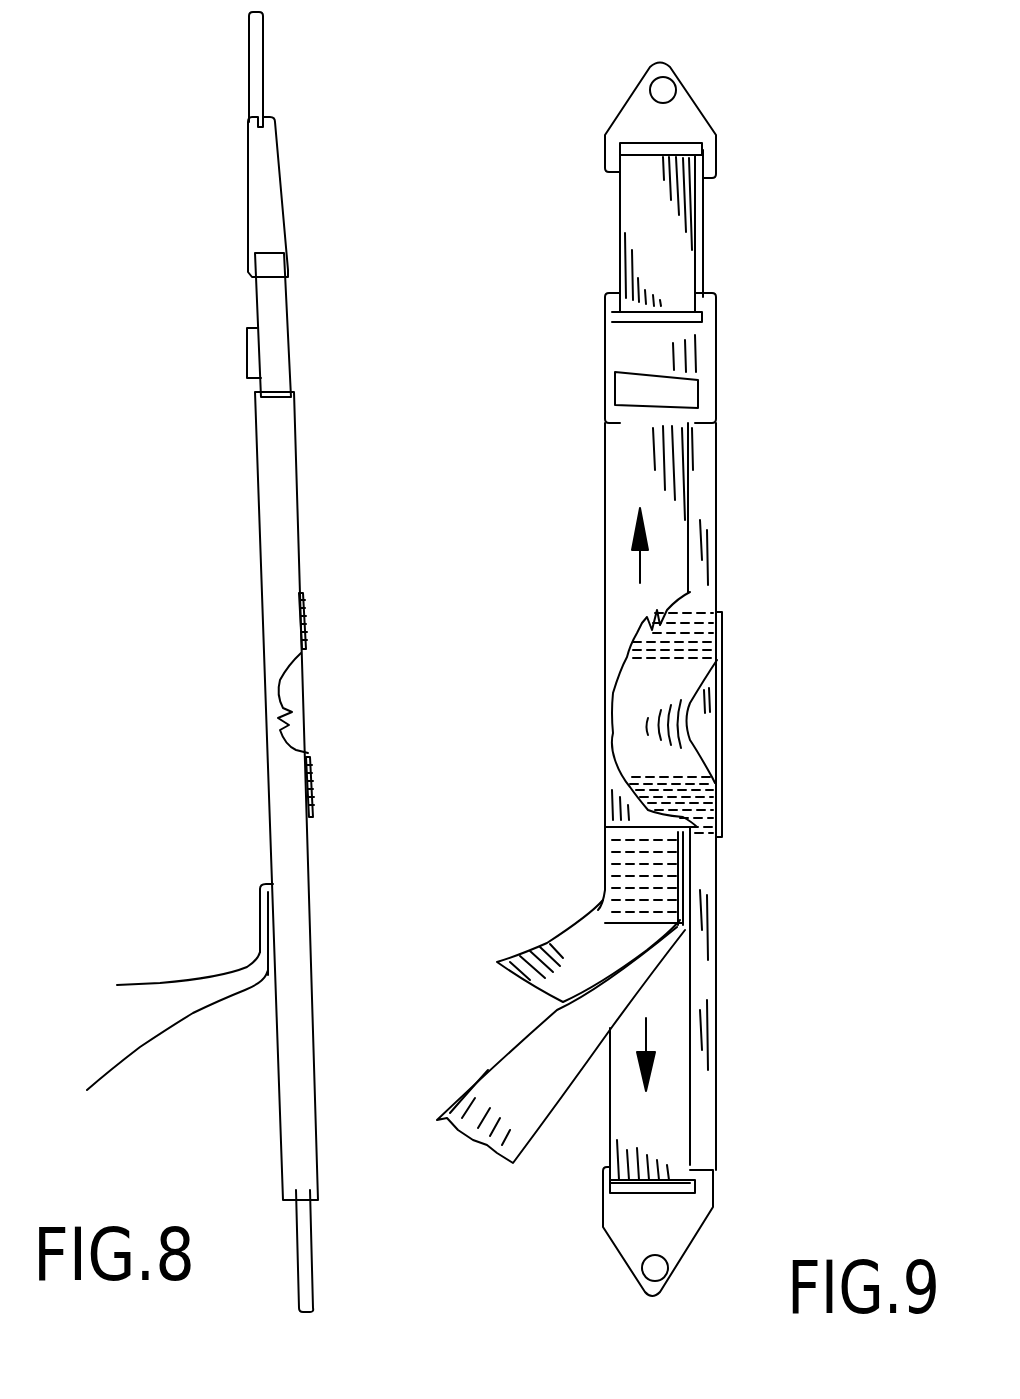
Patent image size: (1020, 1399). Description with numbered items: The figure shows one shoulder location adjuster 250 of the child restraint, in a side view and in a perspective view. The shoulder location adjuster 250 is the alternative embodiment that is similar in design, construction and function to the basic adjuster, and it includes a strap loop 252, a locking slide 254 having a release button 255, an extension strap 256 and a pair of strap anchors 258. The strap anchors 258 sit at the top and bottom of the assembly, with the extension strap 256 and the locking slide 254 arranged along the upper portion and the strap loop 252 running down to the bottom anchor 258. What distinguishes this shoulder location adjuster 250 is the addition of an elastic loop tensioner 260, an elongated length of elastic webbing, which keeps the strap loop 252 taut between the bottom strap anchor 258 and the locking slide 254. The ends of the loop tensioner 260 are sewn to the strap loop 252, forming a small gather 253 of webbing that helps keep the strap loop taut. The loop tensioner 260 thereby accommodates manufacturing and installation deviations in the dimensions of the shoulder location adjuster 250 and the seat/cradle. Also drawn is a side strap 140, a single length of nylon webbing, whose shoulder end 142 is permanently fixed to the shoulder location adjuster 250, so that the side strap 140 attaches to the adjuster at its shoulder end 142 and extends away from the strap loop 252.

In FIG. 8, the side strap 140 is at (148, 1042).
In FIG. 9, the side strap 140 is at (538, 1057).
In FIG. 8, the shoulder end 142 is at (262, 925).
In FIG. 9, the shoulder end 142 is at (630, 878).
In FIG. 8, the shoulder location adjuster 250 is at (198, 273).
In FIG. 9, the shoulder location adjuster 250 is at (747, 612).
In FIG. 8, the strap loop 252 is at (302, 593).
In FIG. 9, the strap loop 252 is at (703, 1080).
In FIG. 8, the gather 253 is at (258, 647).
In FIG. 9, the gather 253 is at (642, 708).
In FIG. 8, the locking slide 254 is at (276, 330).
In FIG. 9, the locking slide 254 is at (695, 345).
In FIG. 9, the release button 255 is at (630, 393).
In FIG. 8, the extension strap 256 is at (280, 190).
In FIG. 9, the extension strap 256 is at (700, 243).
In FIG. 8, the strap anchor 258 is at (258, 72).
In FIG. 9, the strap anchor 258 is at (705, 122).
In FIG. 8, the loop tensioner 260 is at (315, 695).
In FIG. 9, the loop tensioner 260 is at (702, 735).